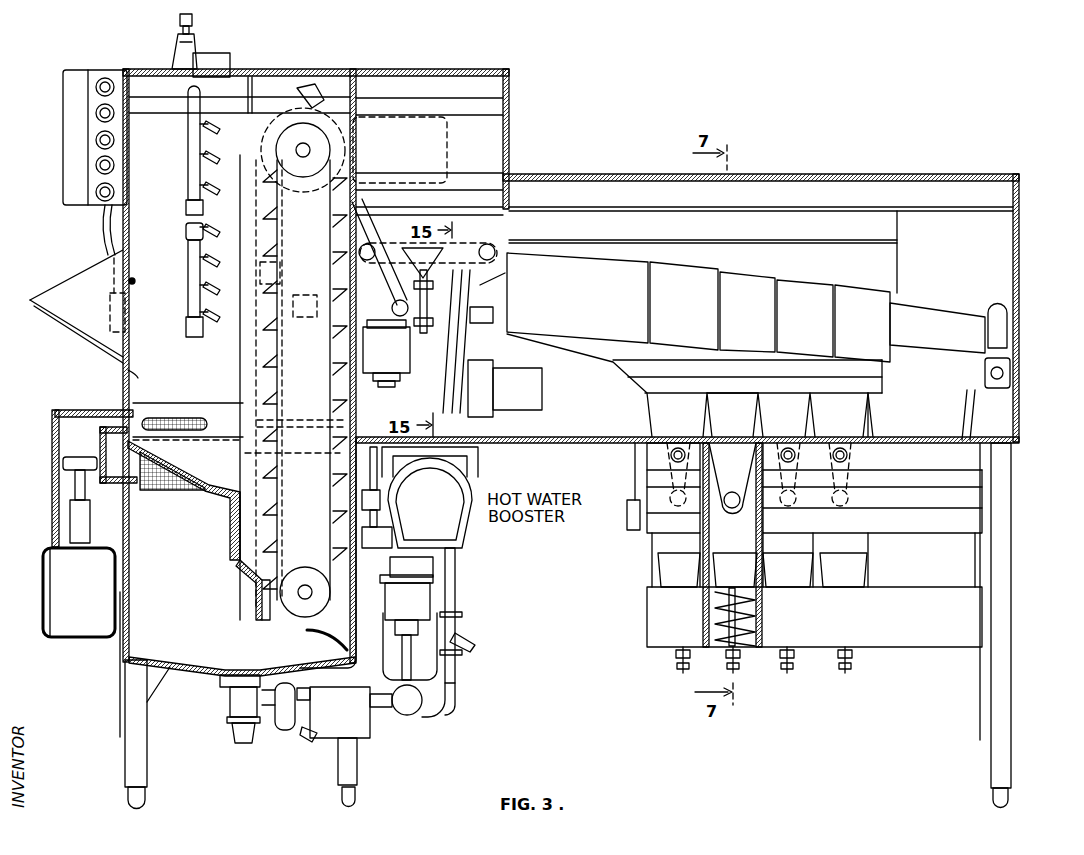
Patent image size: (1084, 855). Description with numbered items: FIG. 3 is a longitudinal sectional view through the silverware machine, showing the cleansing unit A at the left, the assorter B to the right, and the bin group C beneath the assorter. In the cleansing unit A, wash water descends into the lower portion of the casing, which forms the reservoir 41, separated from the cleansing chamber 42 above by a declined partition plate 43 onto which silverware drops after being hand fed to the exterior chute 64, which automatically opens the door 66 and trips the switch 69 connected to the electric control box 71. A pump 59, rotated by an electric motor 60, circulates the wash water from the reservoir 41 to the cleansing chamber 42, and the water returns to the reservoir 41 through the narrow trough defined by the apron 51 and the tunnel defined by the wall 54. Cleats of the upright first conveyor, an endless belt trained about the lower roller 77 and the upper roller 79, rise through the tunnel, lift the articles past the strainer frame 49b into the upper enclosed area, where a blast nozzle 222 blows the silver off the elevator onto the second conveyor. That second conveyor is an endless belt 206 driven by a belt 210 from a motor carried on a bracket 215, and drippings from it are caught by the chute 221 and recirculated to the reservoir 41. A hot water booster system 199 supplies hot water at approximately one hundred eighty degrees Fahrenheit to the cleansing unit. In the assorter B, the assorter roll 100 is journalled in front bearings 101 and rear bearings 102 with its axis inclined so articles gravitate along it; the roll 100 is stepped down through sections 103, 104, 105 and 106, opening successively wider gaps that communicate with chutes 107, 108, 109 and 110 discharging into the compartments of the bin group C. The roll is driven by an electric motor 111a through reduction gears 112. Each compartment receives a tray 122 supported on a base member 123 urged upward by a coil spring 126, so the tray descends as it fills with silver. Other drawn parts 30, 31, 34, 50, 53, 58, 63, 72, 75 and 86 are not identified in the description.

The tank wall 30 is at (127, 645).
The partition wall 31 is at (357, 594).
The tank bottom 34 is at (193, 674).
The reservoir 41 is at (176, 590).
The cleansing chamber 42 is at (190, 461).
The declined partition plate 43 is at (208, 490).
The open frame of strainer 49b is at (230, 385).
The strainer 50 is at (163, 484).
The apron 51 is at (230, 530).
The baffle plate 53 is at (241, 572).
The wall 54 is at (261, 608).
The housing 58 is at (57, 415).
The pump 59 is at (53, 468).
The electric motor 60 is at (96, 598).
The channel 63 is at (100, 446).
The exterior chute 64 is at (78, 328).
The door 66 is at (132, 356).
The switch 69 is at (107, 313).
The electric control box 71 is at (86, 70).
The lower spray pipe 72 is at (188, 298).
The upper spray pipe 75 is at (188, 168).
The lower roller 77 is at (305, 578).
The upper roller 79 is at (306, 168).
The conveyor 86 is at (285, 397).
The assorter roll 100 is at (580, 310).
The front bearings 101 is at (487, 280).
The rear bearings 102 is at (1003, 322).
The section of roll 103 is at (693, 316).
The section of roll 104 is at (757, 321).
The section of roll 105 is at (817, 325).
The section of roll 106 is at (870, 330).
The chute 107 is at (650, 425).
The chute 108 is at (743, 440).
The chute 109 is at (797, 440).
The chute 110 is at (845, 440).
The electric motor 111a is at (528, 387).
The reduction gears 112 is at (499, 366).
The tray 122 is at (692, 576).
The base member 123 is at (760, 600).
The coil spring 126 is at (757, 628).
The hot water booster system 199 is at (487, 513).
The endless belt 206 is at (470, 245).
The belt 210 is at (378, 262).
The bracket 215 is at (406, 258).
The catch cup or chute 221 is at (353, 333).
The blast nozzle 222 is at (308, 90).
The cleansing unit A is at (143, 66).
The assorter B is at (897, 174).
The bin group C is at (645, 584).